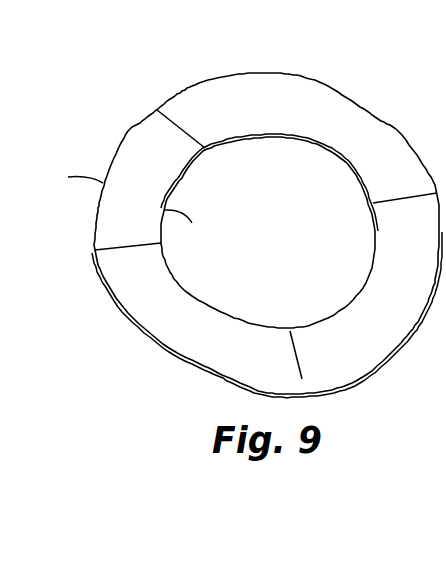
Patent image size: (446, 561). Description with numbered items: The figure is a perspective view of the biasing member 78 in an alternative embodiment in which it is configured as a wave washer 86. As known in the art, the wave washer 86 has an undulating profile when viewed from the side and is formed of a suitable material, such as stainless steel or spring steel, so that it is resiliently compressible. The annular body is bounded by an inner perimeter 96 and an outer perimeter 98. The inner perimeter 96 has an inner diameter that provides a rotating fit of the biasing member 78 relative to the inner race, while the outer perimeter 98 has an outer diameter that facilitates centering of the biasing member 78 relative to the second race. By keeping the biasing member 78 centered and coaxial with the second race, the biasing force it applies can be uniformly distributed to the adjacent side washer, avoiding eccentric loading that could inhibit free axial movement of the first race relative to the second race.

The biasing member 78 is at (155, 66).
The wave washer 86 is at (241, 235).
The outer perimeter 98 is at (361, 107).
The inner perimeter 96 is at (320, 156).